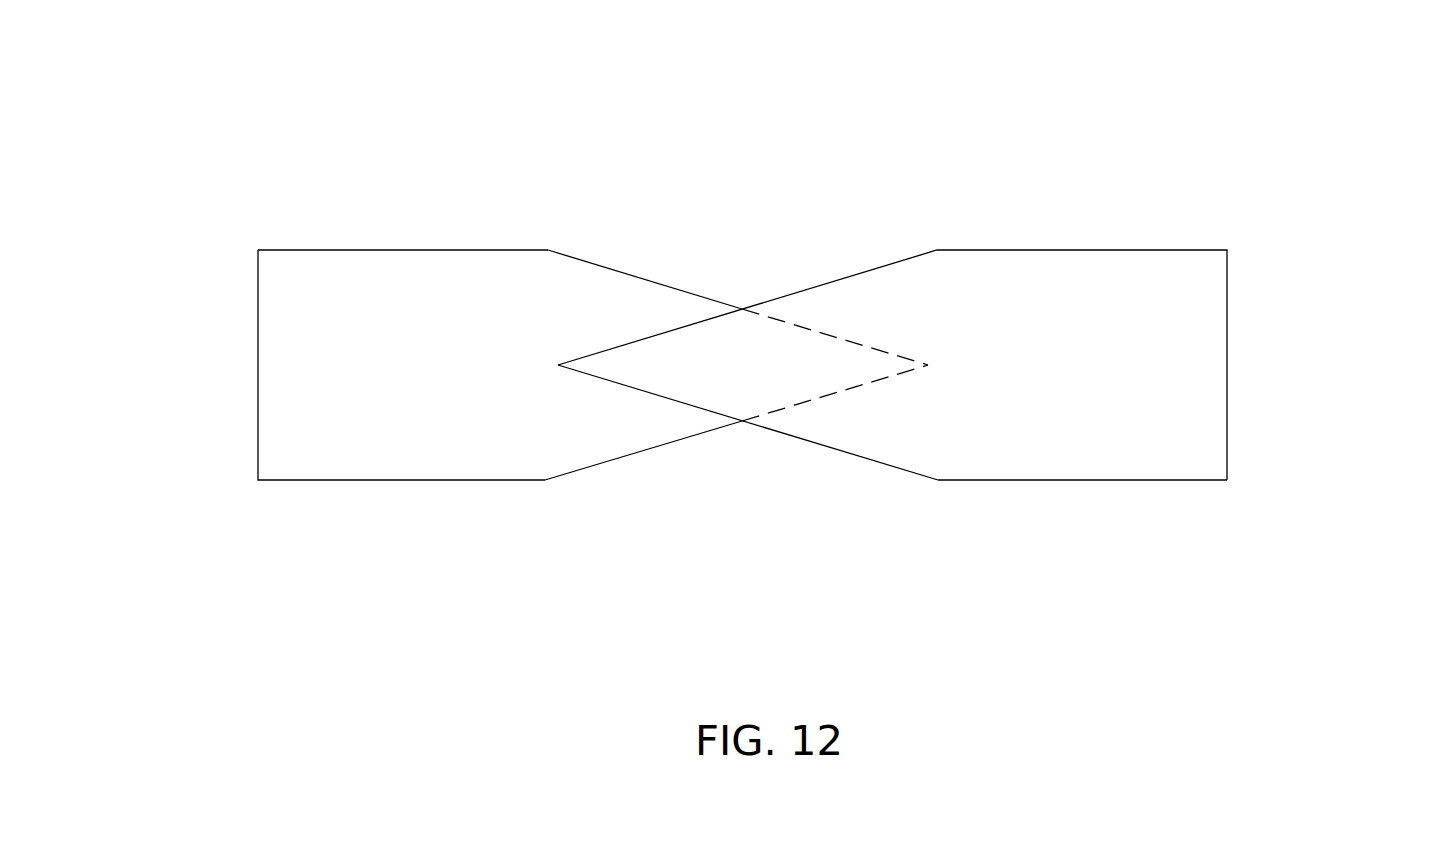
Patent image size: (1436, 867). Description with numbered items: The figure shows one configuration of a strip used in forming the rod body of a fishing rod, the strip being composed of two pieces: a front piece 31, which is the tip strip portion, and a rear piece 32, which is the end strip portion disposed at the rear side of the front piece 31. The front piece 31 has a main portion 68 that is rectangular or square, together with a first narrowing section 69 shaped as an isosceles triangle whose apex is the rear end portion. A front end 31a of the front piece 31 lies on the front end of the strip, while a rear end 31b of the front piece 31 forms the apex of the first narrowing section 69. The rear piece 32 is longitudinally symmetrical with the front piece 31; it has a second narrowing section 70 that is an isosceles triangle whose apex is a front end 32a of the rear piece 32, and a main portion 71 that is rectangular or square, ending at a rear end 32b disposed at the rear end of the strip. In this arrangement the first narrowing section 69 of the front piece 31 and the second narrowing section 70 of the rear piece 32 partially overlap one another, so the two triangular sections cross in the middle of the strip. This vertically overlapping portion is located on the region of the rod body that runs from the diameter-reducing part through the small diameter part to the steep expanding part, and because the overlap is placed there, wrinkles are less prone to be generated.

The front piece 31 is at (368, 249).
The front end of the front piece 31a is at (257, 365).
The rear end of the front piece 31b is at (928, 365).
The rear piece 32 is at (1115, 249).
The front end of the rear piece 32a is at (557, 365).
The rear end of the rear piece 32b is at (1227, 365).
The main portion 68 is at (470, 249).
The first narrowing section 69 is at (652, 280).
The second narrowing section 70 is at (810, 441).
The main portion 71 is at (1105, 481).